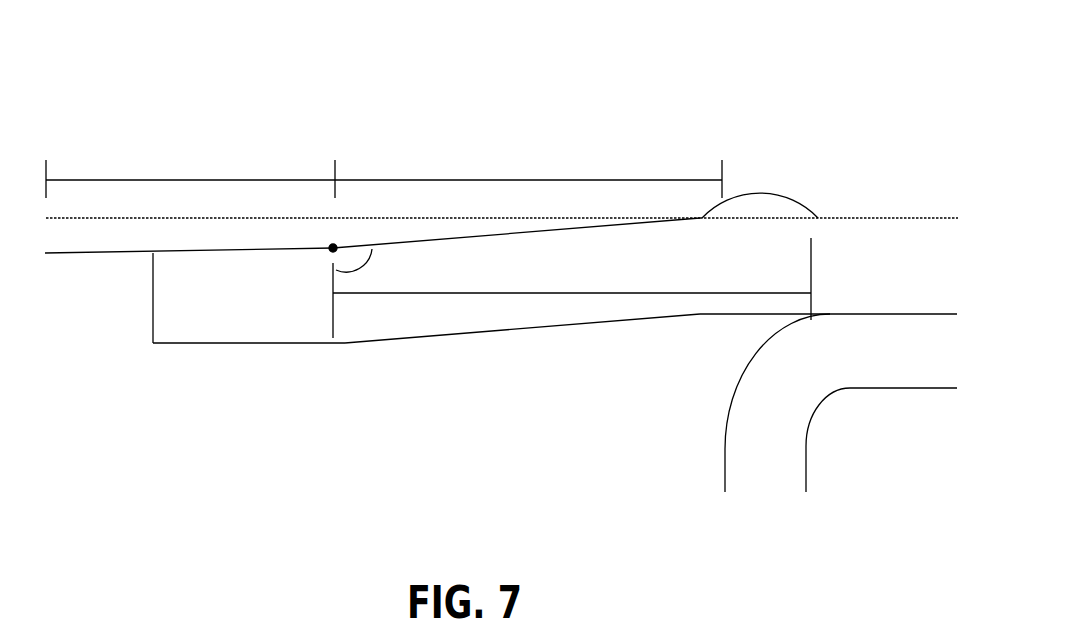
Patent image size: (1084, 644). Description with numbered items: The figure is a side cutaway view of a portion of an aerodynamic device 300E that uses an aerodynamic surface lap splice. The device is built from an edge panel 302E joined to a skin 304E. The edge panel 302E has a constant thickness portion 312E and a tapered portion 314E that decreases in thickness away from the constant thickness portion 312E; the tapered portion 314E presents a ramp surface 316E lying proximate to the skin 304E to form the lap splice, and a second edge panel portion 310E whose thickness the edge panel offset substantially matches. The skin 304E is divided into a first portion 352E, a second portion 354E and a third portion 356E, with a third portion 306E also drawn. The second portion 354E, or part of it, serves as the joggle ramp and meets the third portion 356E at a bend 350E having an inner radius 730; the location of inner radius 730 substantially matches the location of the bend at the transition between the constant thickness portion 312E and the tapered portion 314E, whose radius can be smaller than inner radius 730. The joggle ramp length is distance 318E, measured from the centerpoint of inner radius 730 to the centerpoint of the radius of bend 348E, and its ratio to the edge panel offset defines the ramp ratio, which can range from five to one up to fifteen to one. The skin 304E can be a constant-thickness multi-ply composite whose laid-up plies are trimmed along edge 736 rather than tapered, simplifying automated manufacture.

The aerodynamic device 300E is at (237, 61).
The edge panel 302E is at (448, 217).
The skin 304E is at (613, 322).
The third portion 306E is at (887, 388).
The second edge panel portion 310E is at (85, 252).
The constant thickness portion 312E is at (147, 180).
The tapered portion 314E is at (633, 180).
The ramp surface 316E is at (557, 230).
The distance 318E is at (427, 293).
The bend 348E is at (770, 194).
The bend 350E is at (358, 270).
The first portion 352E is at (880, 260).
The second portion 354E is at (533, 310).
The third portion 356E is at (212, 310).
The inner radius 730 is at (330, 251).
The edge 736 is at (152, 322).